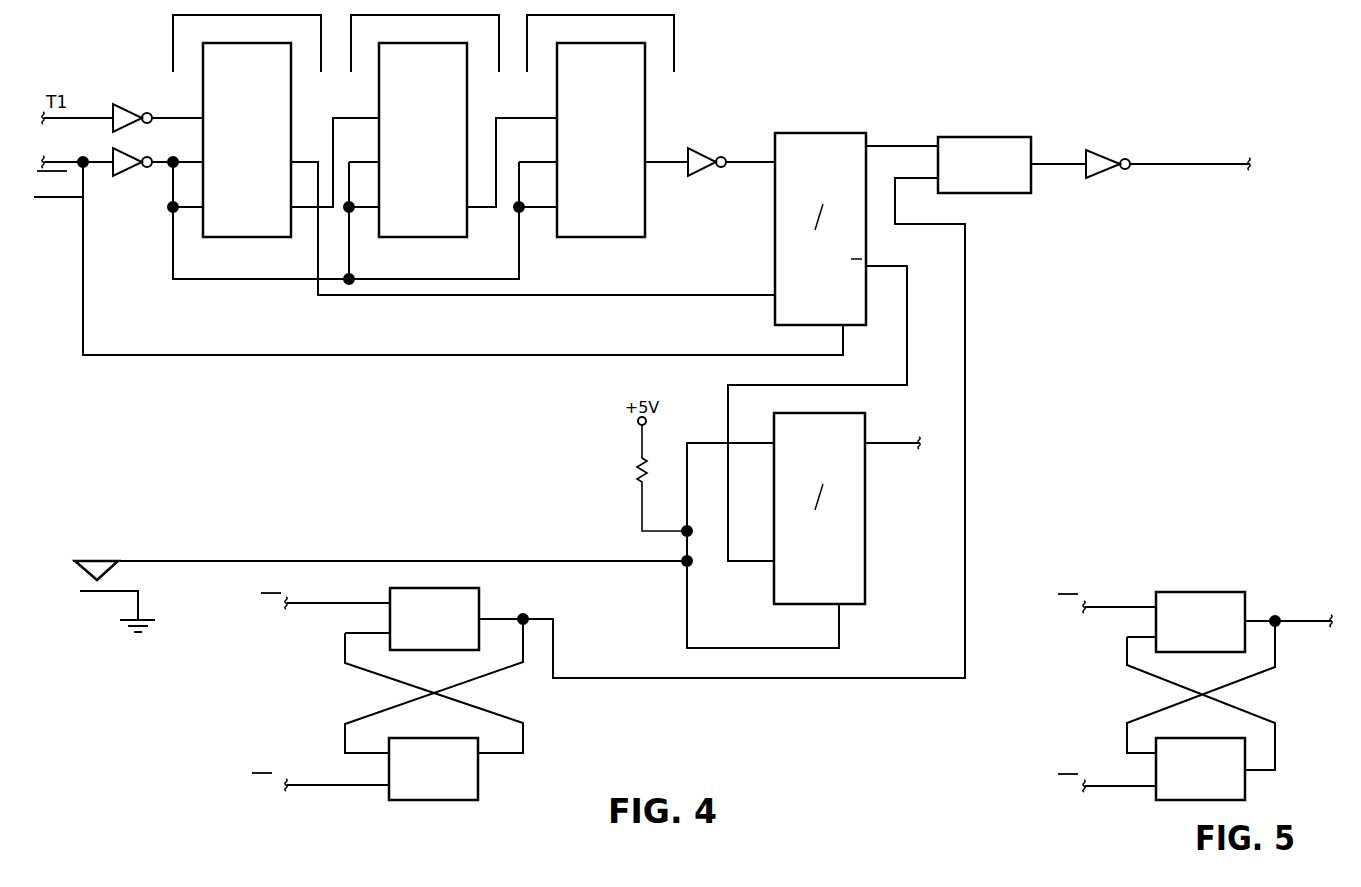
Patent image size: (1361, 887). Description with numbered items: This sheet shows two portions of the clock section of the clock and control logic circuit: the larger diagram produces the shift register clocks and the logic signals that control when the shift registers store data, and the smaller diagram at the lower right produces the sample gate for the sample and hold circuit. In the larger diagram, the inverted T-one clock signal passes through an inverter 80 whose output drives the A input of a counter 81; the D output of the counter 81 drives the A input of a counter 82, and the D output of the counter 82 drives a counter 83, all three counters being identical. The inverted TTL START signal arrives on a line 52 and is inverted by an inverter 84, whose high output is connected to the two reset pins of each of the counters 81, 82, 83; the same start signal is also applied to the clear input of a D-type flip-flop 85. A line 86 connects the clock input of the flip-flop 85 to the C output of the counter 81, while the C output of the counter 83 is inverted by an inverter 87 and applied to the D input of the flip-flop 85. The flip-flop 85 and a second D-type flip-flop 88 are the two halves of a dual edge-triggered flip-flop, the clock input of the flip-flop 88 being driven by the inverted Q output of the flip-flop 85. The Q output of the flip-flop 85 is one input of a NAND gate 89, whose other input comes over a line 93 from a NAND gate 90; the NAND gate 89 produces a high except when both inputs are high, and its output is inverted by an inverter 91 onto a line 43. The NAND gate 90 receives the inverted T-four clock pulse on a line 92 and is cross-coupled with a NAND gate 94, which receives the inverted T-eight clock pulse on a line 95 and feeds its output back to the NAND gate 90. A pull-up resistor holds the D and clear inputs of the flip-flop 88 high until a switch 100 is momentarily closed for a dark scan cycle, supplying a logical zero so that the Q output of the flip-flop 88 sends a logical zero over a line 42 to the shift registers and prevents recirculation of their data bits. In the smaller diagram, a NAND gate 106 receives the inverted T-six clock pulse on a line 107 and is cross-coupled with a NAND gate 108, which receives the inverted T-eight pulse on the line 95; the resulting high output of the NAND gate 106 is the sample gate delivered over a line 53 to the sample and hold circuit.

In FIG. 4, the line 42 is at (896, 440).
In FIG. 4, the line 43 is at (1196, 164).
In FIG. 4, the line 52 is at (50, 160).
In FIG. 5, the line 53 is at (1294, 622).
In FIG. 4, the inverter 80 is at (130, 110).
In FIG. 4, the counter 81 is at (262, 238).
In FIG. 4, the counter 82 is at (444, 238).
In FIG. 4, the counter 83 is at (620, 238).
In FIG. 4, the inverter 84 is at (130, 170).
In FIG. 4, the D-type flip-flop 85 is at (775, 244).
In FIG. 4, the line 86 is at (587, 297).
In FIG. 4, the inverter 87 is at (697, 148).
In FIG. 4, the D-type flip-flop 88 is at (868, 531).
In FIG. 4, the NAND gate 89 is at (995, 137).
In FIG. 4, the NAND gate 90 is at (479, 598).
In FIG. 4, the inverter 91 is at (1102, 148).
In FIG. 4, the line 92 is at (336, 604).
In FIG. 4, the line 93 is at (643, 677).
In FIG. 4, the NAND gate 94 is at (478, 790).
In FIG. 4, the line 95 is at (337, 790).
In FIG. 5, the line 95 is at (1109, 782).
In FIG. 4, the switch 100 is at (150, 562).
In FIG. 5, the NAND gate 106 is at (1234, 592).
In FIG. 5, the line 107 is at (1112, 608).
In FIG. 5, the NAND gate 108 is at (1245, 790).